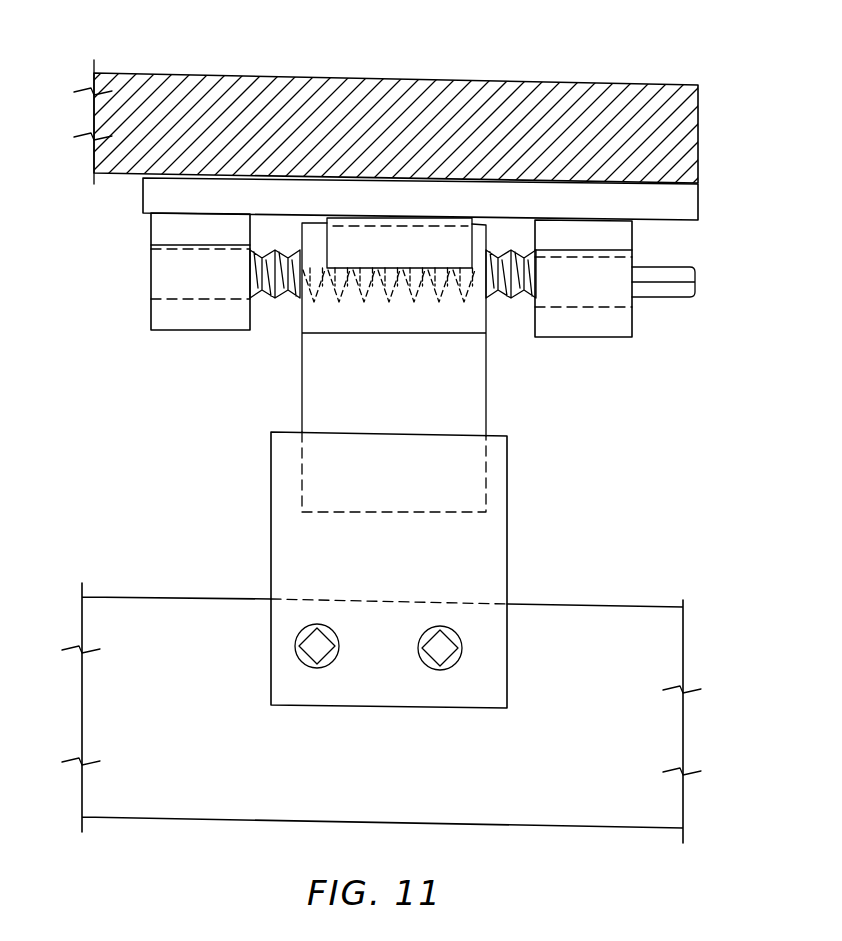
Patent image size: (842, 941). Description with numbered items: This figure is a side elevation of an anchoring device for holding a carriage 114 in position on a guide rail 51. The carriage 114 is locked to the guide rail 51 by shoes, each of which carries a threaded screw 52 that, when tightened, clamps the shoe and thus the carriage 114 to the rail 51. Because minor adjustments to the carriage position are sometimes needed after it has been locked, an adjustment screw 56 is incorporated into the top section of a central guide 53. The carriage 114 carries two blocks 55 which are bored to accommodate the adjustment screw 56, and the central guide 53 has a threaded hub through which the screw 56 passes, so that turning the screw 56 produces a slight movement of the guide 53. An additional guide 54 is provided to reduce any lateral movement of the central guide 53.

The carriage 114 is at (340, 78).
The guide rail 51 is at (620, 607).
The threaded screw 52 is at (298, 632).
The central guide 53 is at (472, 413).
The additional guide 54 is at (343, 253).
The block 55 is at (151, 276).
The adjustment screw 56 is at (677, 266).